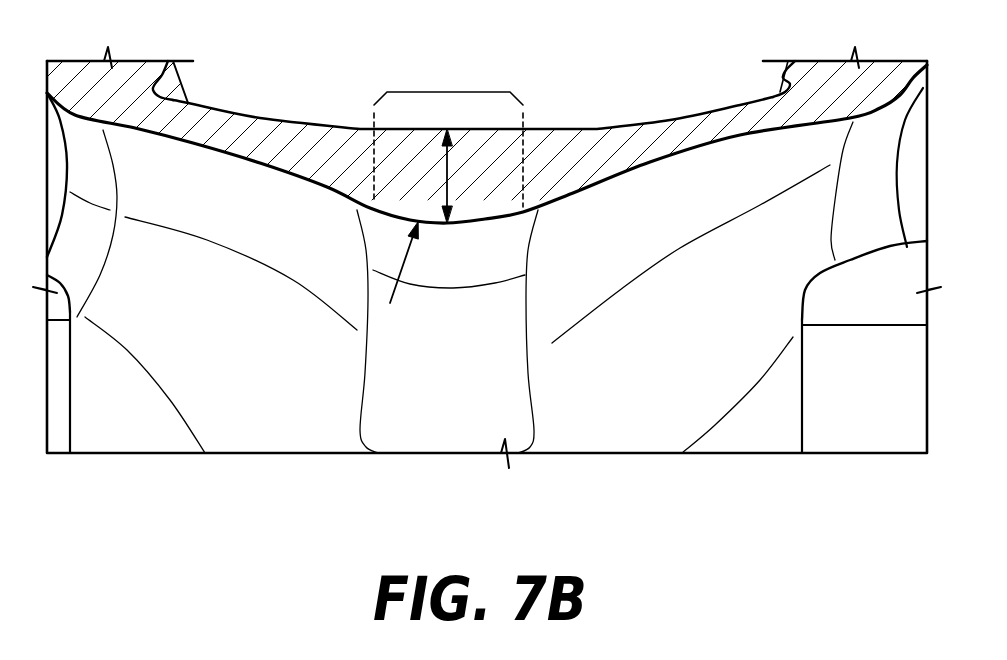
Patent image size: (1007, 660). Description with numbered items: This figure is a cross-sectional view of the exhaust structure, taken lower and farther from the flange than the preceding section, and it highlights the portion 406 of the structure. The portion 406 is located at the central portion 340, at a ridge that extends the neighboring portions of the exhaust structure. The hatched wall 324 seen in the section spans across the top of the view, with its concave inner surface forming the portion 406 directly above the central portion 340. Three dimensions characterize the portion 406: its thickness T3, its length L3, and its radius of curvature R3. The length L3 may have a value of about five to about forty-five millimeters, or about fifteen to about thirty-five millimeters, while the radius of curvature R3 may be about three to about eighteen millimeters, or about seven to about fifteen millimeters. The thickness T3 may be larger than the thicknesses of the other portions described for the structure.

The closure wall / top panel 324 is at (240, 115).
The central portion 340 is at (463, 388).
The portion 406 is at (490, 222).
The length L3 is at (440, 92).
The thickness T3 is at (443, 180).
The radius of curvature R3 is at (397, 280).